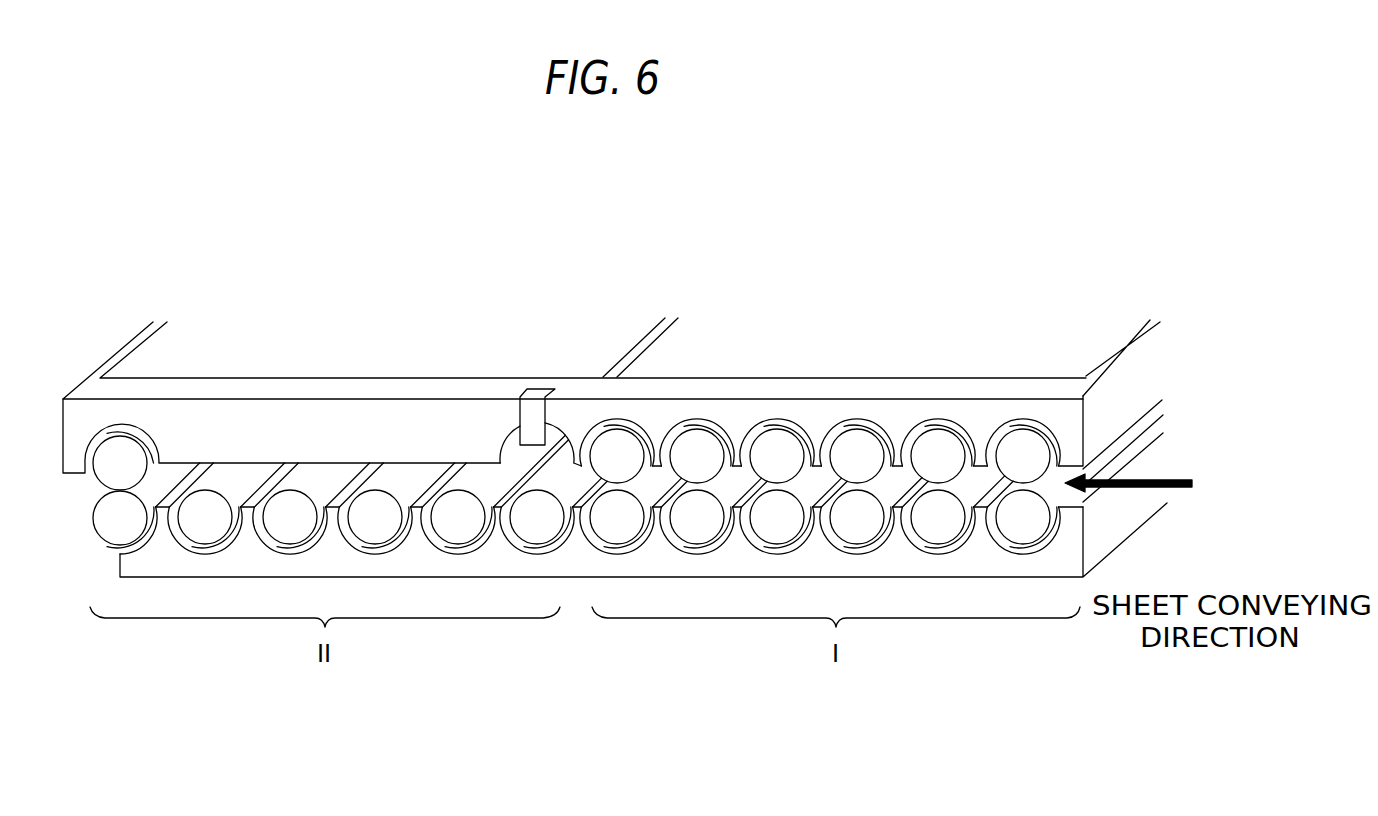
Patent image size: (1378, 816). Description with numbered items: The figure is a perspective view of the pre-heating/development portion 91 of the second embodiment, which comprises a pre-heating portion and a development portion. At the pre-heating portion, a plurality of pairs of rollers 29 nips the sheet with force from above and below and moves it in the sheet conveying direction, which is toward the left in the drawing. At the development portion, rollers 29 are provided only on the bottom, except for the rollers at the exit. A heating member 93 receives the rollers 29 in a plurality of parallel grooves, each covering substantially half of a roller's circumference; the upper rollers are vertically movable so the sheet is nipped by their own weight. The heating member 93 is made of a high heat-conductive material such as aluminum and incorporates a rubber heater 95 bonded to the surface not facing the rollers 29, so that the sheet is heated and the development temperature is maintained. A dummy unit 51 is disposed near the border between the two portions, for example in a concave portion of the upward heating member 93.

The rollers 29 is at (150, 500).
The dummy unit 51 is at (522, 391).
The pre-heating/development portion 91 is at (893, 312).
The heating member 93 is at (1152, 456).
The rubber heater 95 is at (620, 340).